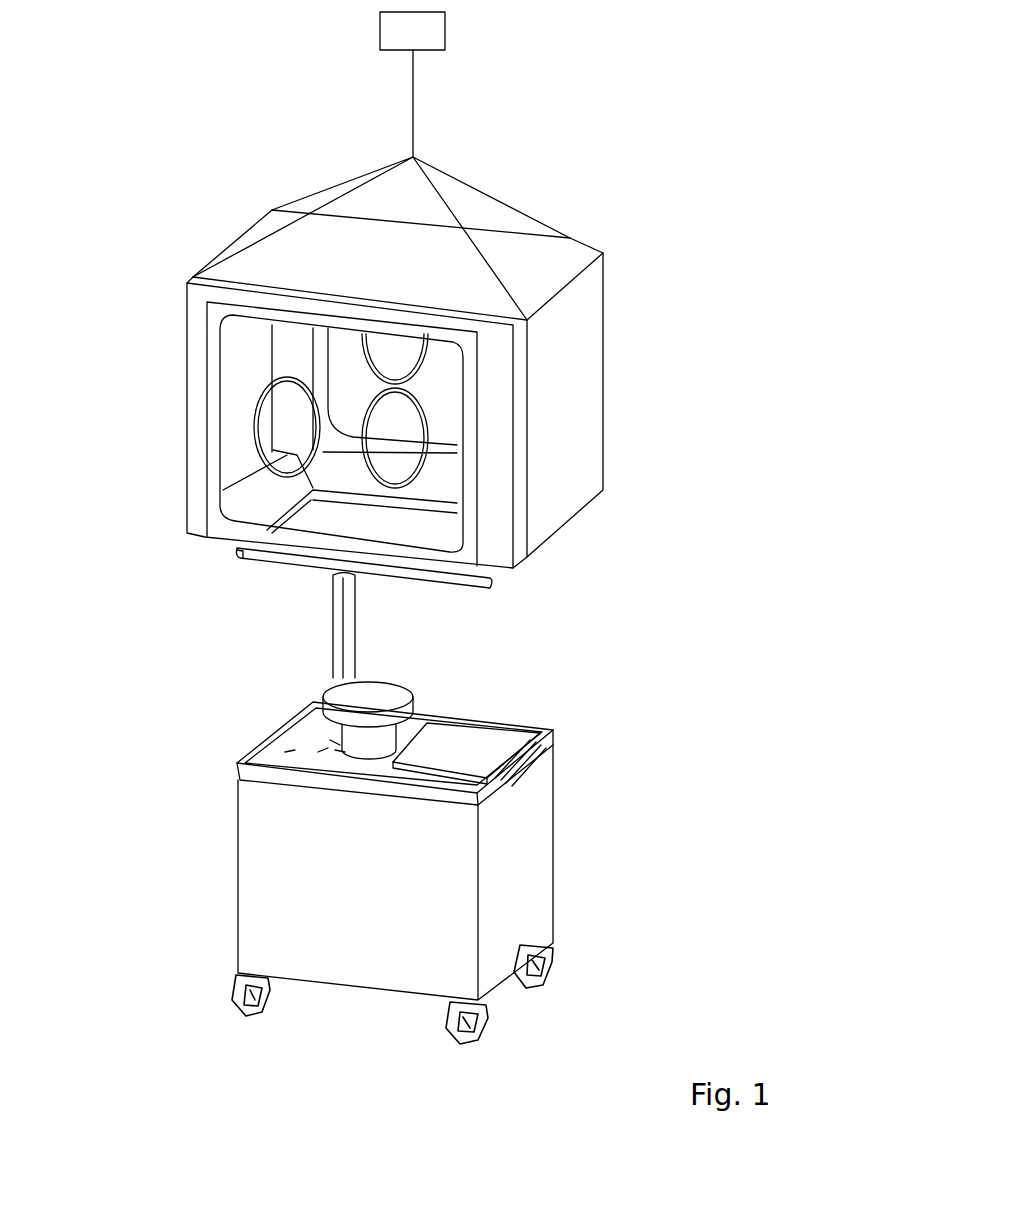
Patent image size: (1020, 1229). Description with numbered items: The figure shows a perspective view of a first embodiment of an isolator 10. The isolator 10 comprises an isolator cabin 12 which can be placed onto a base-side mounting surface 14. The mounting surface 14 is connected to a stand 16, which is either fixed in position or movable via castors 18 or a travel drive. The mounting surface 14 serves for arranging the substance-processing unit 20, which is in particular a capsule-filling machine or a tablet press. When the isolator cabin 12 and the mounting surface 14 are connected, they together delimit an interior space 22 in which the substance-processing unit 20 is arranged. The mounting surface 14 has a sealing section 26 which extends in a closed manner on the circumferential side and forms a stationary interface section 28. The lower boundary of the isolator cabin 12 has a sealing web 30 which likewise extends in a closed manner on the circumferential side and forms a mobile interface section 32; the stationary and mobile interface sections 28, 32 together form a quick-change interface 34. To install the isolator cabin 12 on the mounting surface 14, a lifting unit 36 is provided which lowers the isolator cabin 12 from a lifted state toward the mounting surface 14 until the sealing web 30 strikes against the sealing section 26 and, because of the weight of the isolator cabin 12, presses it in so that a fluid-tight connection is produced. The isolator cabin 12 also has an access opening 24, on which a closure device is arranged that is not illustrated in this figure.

The isolator 10 is at (592, 140).
The isolator cabin 12 is at (620, 374).
The mounting surface 14 is at (305, 746).
The stand 16 is at (253, 882).
The castors 18 is at (240, 1005).
The substance-processing unit 20 is at (398, 694).
The interior space 22 is at (364, 403).
The access opening 24 is at (262, 388).
The sealing section 26 is at (538, 728).
The stationary interface section 28 is at (548, 726).
The sealing web 30 is at (308, 560).
The mobile interface section 32 is at (455, 581).
The quick-change interface 34 is at (600, 612).
The lifting unit 36 is at (424, 46).